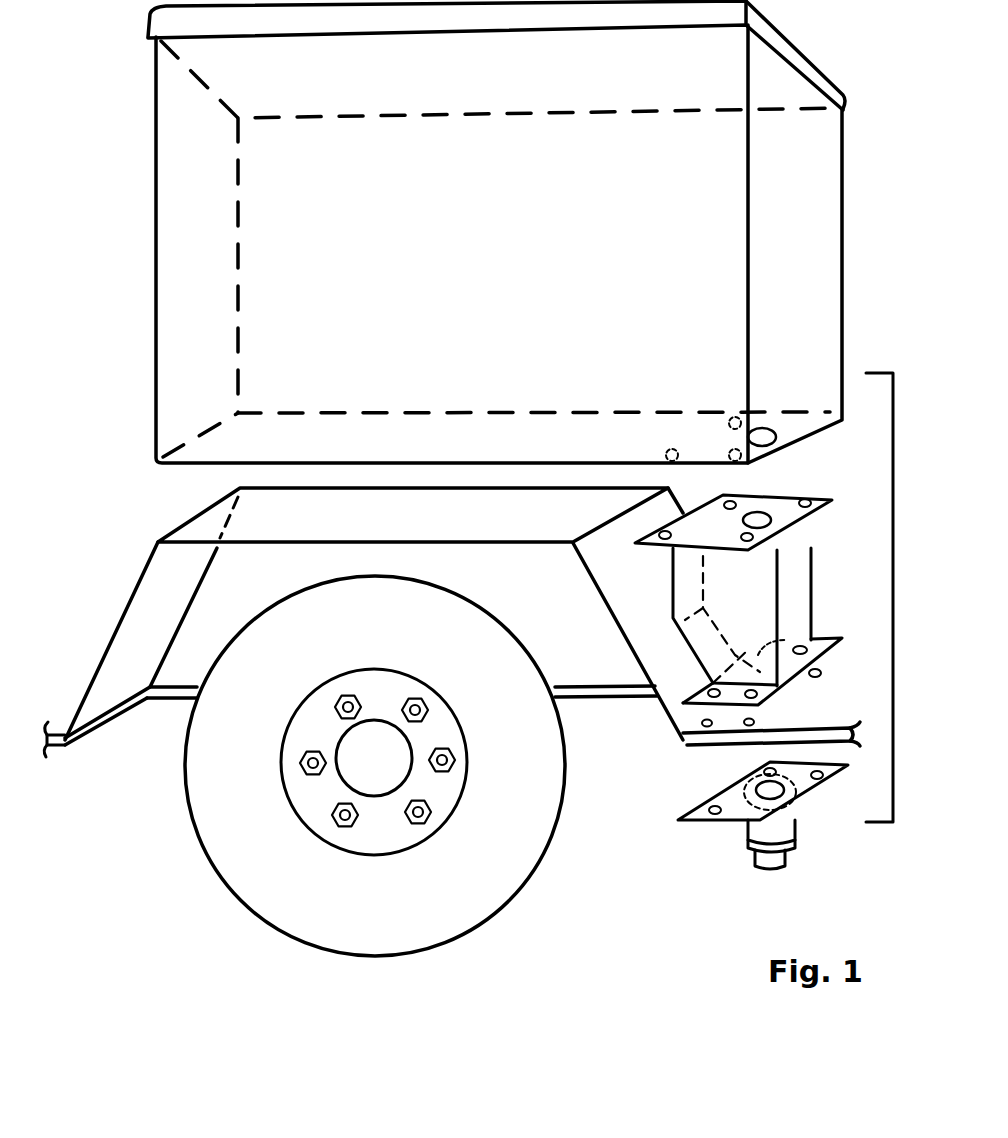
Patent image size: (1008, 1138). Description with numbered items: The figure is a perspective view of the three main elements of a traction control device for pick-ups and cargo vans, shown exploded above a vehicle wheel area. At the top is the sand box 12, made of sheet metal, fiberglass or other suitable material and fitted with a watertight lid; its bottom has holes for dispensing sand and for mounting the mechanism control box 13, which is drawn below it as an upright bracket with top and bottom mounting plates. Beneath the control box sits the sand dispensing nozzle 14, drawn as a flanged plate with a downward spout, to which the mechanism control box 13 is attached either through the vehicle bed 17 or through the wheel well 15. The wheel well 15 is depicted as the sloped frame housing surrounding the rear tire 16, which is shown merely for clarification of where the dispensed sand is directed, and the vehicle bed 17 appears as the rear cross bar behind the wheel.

The sand box 12 is at (156, 182).
The mechanism control box 13 is at (813, 562).
The sand dispensing nozzle 14 is at (745, 836).
The wheel well 15 is at (143, 570).
The rear tire 16 is at (185, 800).
The vehicle bed 17 is at (707, 740).